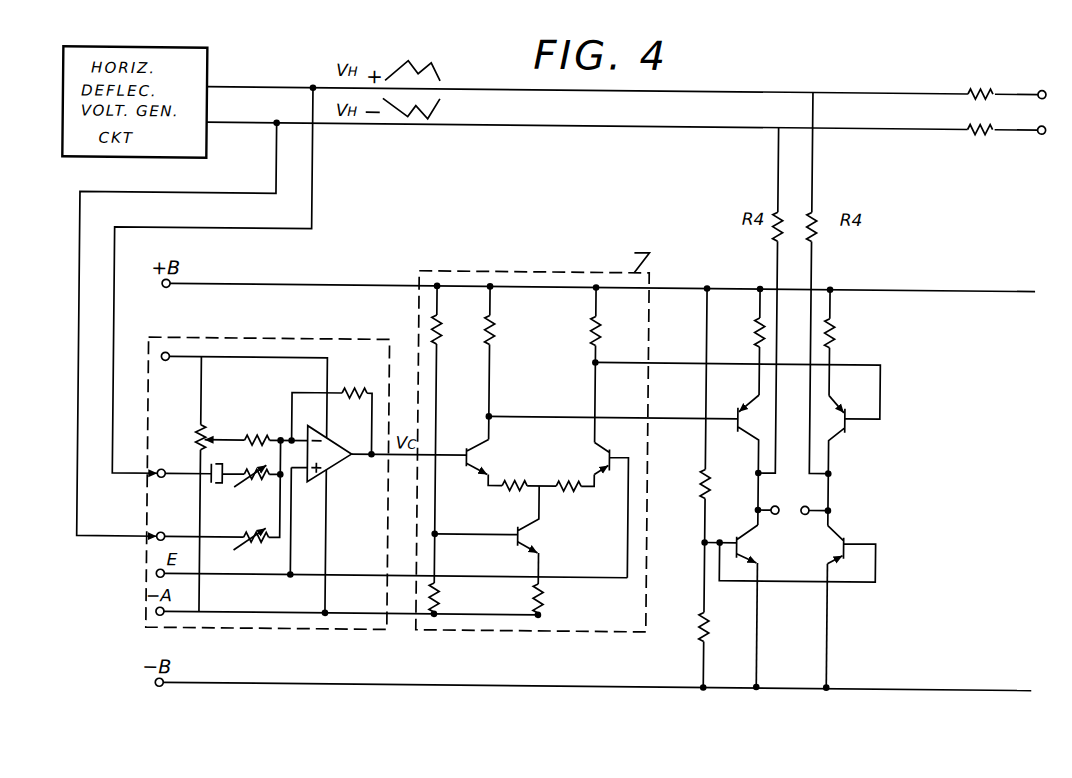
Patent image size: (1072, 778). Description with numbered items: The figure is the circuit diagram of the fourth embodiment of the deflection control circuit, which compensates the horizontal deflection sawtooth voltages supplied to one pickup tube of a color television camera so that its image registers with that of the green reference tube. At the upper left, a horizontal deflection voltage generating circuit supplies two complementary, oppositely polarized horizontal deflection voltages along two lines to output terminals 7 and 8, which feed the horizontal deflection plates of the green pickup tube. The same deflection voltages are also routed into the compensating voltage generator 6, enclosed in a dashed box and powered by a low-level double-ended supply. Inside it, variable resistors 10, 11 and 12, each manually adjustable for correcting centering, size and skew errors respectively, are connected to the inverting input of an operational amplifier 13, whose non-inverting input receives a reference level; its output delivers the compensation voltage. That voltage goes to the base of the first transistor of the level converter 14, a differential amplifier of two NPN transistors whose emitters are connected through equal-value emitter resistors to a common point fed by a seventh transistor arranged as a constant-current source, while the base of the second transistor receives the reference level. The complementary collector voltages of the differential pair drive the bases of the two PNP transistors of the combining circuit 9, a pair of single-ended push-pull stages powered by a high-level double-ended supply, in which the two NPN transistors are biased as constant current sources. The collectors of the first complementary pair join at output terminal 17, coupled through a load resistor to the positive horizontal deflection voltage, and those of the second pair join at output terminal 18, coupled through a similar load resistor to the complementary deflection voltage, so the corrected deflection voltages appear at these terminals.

The compensating voltage generator 6 is at (360, 341).
The output terminal 7 is at (1041, 87).
The output terminal 8 is at (1040, 130).
The combining circuit 9 is at (803, 637).
The variable resistor 10 is at (196, 441).
The variable resistor 11 is at (252, 486).
The variable resistor 12 is at (262, 546).
The operational amplifier 13 is at (335, 469).
The level converter 14 is at (652, 306).
The output terminal 17 is at (778, 506).
The output terminal 18 is at (805, 513).